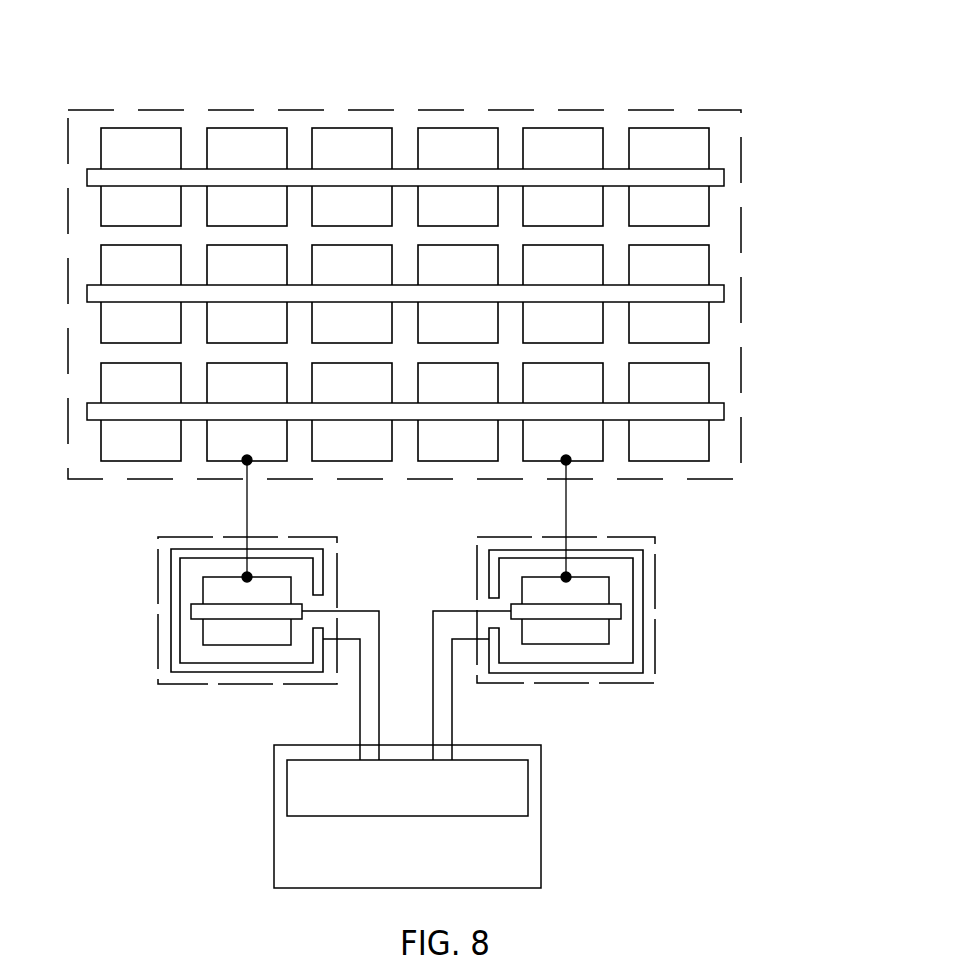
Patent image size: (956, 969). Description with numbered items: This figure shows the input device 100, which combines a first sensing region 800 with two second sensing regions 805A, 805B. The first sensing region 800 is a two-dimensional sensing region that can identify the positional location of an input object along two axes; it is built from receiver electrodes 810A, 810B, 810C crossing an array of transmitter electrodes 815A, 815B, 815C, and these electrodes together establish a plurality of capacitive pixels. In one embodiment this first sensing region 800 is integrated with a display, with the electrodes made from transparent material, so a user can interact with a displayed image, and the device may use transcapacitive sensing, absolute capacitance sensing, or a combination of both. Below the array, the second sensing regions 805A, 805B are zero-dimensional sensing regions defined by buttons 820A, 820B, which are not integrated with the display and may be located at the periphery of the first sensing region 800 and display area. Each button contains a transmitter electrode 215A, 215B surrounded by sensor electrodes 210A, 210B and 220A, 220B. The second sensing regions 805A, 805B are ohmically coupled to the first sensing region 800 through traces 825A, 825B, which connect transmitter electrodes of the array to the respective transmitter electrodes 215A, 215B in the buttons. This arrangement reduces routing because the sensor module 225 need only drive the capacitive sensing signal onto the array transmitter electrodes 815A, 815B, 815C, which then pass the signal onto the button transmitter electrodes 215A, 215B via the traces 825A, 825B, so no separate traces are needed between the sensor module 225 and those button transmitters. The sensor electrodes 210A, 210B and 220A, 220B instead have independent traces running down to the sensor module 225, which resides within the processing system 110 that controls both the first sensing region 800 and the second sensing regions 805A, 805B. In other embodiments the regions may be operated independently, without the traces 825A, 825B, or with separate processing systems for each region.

The input device 100 is at (712, 70).
The first sensing region 800 is at (741, 139).
The receiver electrode 810A is at (724, 177).
The receiver electrode 810B is at (724, 295).
The receiver electrode 810C is at (724, 411).
The transmitter electrode 815A is at (140, 128).
The transmitter electrode 815B is at (246, 128).
The transmitter electrode 815C is at (100, 245).
The trace 825A is at (247, 517).
The trace 825B is at (566, 518).
The second sensing region 805A is at (158, 577).
The second sensing region 805B is at (655, 577).
The button 820A is at (236, 645).
The button 820B is at (589, 648).
The sensor electrode 220A is at (196, 672).
The sensor electrode 220B is at (616, 673).
The transmitter electrode 215A is at (203, 626).
The transmitter electrode 215B is at (609, 626).
The sensor electrode 210A is at (335, 606).
The sensor electrode 210B is at (477, 606).
The sensor module 225 is at (521, 806).
The processing system 110 is at (521, 863).